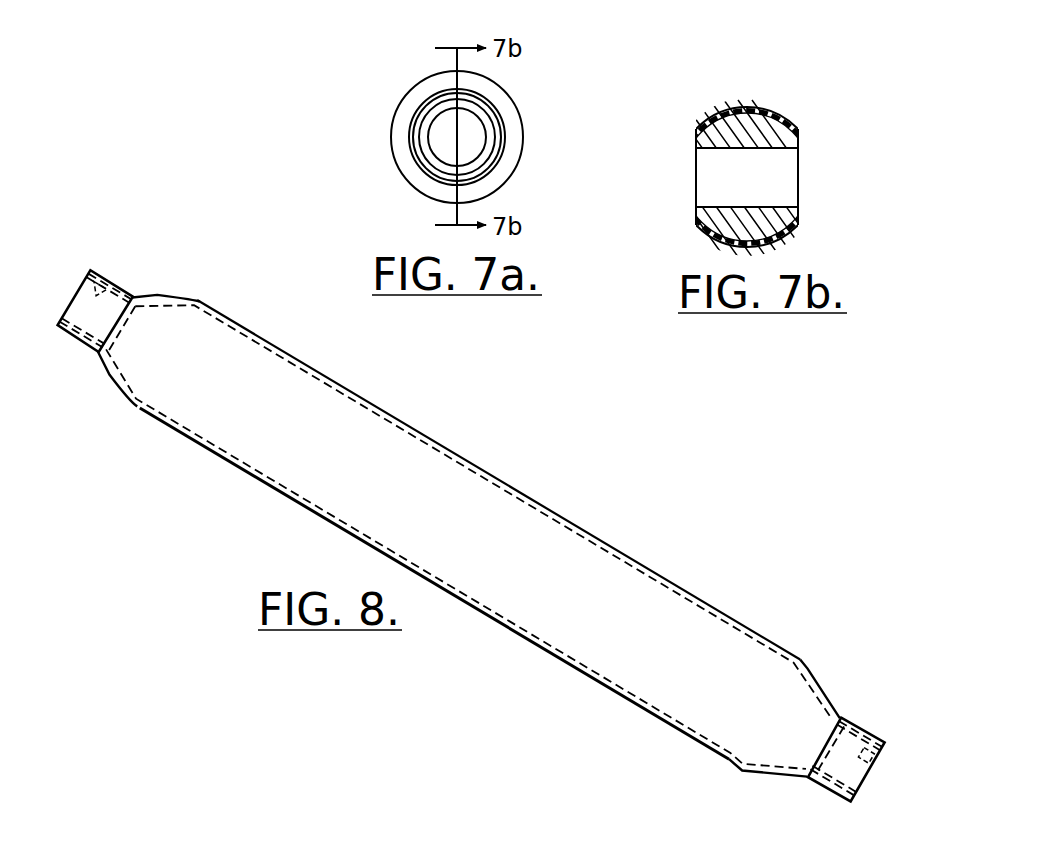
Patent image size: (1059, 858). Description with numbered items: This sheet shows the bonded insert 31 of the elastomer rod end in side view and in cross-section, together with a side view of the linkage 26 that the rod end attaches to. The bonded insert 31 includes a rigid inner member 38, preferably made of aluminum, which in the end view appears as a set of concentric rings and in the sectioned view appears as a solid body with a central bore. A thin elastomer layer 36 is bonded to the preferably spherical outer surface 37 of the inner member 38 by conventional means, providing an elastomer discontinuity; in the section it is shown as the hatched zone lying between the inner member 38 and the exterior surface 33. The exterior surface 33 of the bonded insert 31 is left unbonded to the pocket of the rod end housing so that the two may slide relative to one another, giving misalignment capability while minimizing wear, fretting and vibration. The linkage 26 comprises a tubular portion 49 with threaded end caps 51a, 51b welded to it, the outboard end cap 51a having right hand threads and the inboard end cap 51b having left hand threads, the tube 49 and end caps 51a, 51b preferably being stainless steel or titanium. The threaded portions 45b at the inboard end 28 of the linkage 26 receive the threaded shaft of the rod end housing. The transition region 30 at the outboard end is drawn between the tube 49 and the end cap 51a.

In FIG. 8, the linkage 26 is at (398, 416).
In FIG. 8, the inboard end 28 is at (732, 753).
In FIG. 8, the inlet end transition 30 is at (152, 412).
In FIG. 7a, the bonded insert 31 is at (436, 71).
In FIG. 7b, the bonded insert 31 is at (702, 113).
In FIG. 7a, the exterior surface 33 is at (494, 83).
In FIG. 7b, the exterior surface 33 is at (780, 114).
In FIG. 7a, the elastomer layer 36 is at (427, 86).
In FIG. 7b, the elastomer layer 36 is at (752, 109).
In FIG. 7b, the spherical outer surface 37 is at (736, 112).
In FIG. 7a, the inner member 38 is at (488, 120).
In FIG. 7b, the inner member 38 is at (701, 139).
In FIG. 8, the threaded portions 45b is at (112, 283).
In FIG. 8, the tubular portion 49 is at (278, 457).
In FIG. 8, the outboard end cap 51a is at (94, 348).
In FIG. 8, the inboard end cap 51b is at (840, 718).